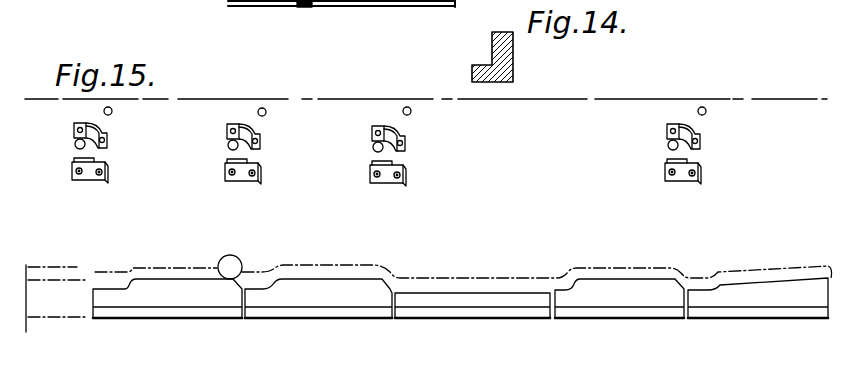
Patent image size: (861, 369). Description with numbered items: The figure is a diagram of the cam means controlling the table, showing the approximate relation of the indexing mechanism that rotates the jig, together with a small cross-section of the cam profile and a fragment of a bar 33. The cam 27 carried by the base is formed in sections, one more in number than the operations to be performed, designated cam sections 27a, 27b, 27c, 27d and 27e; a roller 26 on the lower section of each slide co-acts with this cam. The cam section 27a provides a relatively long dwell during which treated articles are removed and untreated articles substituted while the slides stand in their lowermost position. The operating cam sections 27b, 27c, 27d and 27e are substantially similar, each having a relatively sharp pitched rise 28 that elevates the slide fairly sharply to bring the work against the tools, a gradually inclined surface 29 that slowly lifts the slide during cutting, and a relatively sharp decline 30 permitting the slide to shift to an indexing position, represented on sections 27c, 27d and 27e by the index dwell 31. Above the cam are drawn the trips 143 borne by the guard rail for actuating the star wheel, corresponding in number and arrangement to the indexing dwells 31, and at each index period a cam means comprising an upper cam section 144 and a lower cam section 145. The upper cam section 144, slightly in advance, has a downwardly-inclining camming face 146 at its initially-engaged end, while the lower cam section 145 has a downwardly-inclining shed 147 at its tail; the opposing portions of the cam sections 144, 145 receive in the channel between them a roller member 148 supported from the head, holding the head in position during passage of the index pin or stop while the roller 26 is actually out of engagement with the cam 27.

In FIG. 15, the roller 26 is at (219, 258).
In FIG. 15, the cam 27 is at (543, 242).
In FIG. 14, the cam section 27a is at (513, 72).
In FIG. 15, the cam section 27a is at (462, 302).
In FIG. 15, the cam section 27b is at (662, 294).
In FIG. 15, the cam section 27c is at (781, 299).
In FIG. 15, the cam section 27d is at (194, 296).
In FIG. 15, the cam section 27e is at (336, 296).
In FIG. 15, the sharp pitched rise 28 is at (127, 283).
In FIG. 15, the gradually inclined surface 29 is at (50, 277).
In FIG. 15, the sharp decline 30 is at (92, 286).
In FIG. 15, the index dwell 31 is at (103, 288).
In FIG. 14, the bar 33 is at (226, 0).
In FIG. 15, the trip 143 is at (112, 111).
In FIG. 15, the upper cam section 144 is at (109, 142).
In FIG. 15, the lower cam section 145 is at (86, 181).
In FIG. 15, the downwardly-inclining camming face 146 is at (80, 126).
In FIG. 15, the downwardly-inclining shed 147 is at (108, 169).
In FIG. 15, the roller member 148 is at (76, 147).